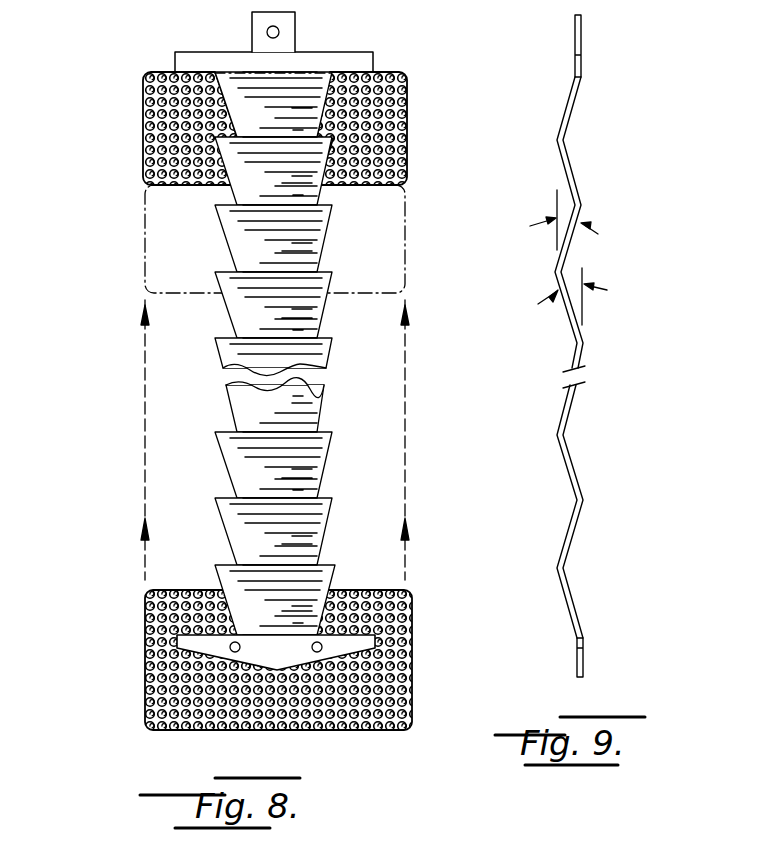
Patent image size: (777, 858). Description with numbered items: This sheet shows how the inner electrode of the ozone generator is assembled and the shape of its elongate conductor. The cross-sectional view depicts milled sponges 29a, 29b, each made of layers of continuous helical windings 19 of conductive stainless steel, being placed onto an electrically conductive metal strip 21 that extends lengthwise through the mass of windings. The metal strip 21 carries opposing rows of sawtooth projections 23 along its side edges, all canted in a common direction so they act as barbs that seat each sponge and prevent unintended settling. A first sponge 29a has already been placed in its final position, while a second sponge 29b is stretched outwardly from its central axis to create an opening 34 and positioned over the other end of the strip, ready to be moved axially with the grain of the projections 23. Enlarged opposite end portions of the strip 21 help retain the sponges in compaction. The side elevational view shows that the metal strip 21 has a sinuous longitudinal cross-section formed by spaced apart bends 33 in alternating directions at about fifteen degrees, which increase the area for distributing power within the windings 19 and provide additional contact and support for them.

In FIG. 8, the helical windings 19 is at (143, 160).
In FIG. 8, the metal strip 21 is at (248, 98).
In FIG. 9, the metal strip 21 is at (582, 43).
In FIG. 8, the sawtooth projections 23 is at (322, 188).
In FIG. 8, the first milled sponge 29a is at (143, 100).
In FIG. 8, the second milled sponge 29b is at (143, 234).
In FIG. 9, the bends 33 is at (578, 78).
In FIG. 8, the opening 34 is at (277, 703).